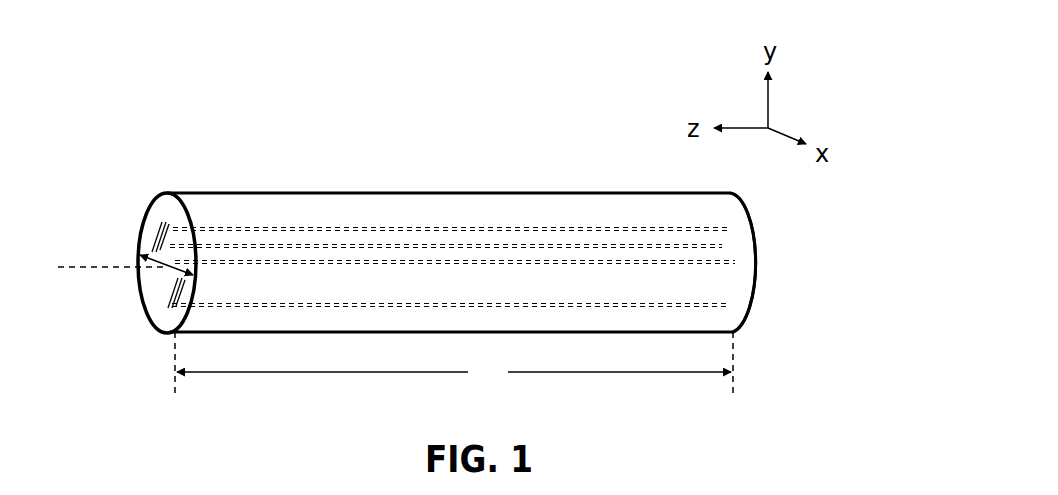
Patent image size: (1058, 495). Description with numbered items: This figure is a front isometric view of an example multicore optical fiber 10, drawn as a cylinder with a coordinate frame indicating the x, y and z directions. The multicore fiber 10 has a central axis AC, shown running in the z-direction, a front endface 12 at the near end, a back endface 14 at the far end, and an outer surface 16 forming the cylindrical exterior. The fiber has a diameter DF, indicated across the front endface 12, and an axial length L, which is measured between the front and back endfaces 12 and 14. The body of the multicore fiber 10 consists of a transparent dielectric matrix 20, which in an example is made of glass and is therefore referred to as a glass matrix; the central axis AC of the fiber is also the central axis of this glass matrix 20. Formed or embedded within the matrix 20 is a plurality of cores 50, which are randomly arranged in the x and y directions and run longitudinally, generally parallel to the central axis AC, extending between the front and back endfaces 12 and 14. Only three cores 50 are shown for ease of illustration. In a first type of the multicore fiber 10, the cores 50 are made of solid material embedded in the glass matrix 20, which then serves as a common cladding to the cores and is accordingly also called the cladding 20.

The multicore optical fiber 10 is at (245, 102).
The front endface 12 is at (157, 287).
The back endface 14 is at (757, 280).
The outer surface 16 is at (597, 212).
The transparent dielectric matrix 20 is at (158, 222).
The cores 50 is at (242, 262).
The central axis AC is at (88, 265).
The diameter DF is at (163, 267).
The axial length L is at (454, 372).